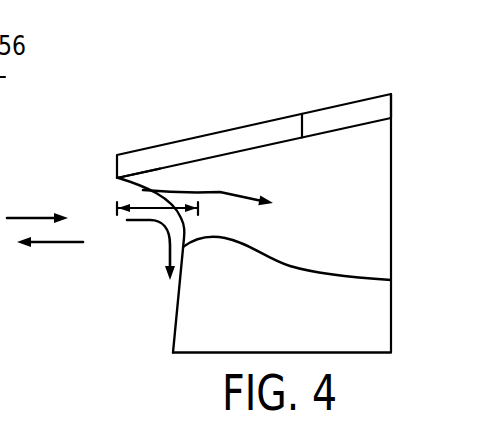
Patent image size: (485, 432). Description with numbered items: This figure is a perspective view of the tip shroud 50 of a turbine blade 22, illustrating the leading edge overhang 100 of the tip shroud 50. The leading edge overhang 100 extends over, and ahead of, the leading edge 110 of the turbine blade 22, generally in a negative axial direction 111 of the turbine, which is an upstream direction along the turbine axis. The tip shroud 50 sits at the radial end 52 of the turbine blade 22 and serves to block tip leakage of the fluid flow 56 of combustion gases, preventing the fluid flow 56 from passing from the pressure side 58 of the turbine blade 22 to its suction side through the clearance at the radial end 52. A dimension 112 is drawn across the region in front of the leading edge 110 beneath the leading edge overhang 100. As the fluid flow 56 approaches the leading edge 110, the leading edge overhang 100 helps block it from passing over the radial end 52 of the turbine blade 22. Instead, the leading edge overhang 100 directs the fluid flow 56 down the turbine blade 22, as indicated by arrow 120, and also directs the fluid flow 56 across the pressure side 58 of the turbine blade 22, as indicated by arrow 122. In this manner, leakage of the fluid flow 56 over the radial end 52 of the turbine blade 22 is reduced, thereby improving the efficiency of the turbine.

The turbine blade 22 is at (355, 340).
The tip shroud 50 is at (348, 142).
The radial end 52 is at (222, 115).
The fluid flow 56 is at (28, 214).
The pressure side 58 is at (318, 275).
The leading edge overhang 100 is at (145, 162).
The leading edge 110 is at (198, 285).
The negative axial direction 111 is at (60, 246).
The gap width 112 is at (181, 218).
The arrow 120 is at (160, 228).
The arrow 122 is at (220, 187).